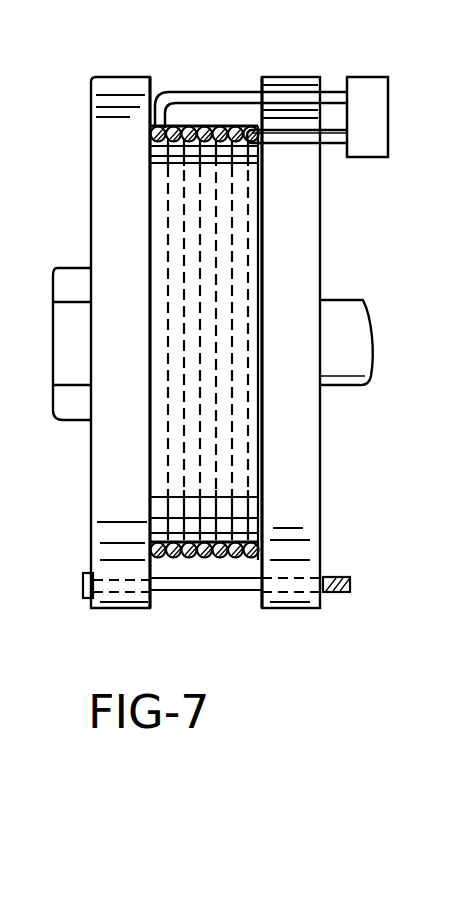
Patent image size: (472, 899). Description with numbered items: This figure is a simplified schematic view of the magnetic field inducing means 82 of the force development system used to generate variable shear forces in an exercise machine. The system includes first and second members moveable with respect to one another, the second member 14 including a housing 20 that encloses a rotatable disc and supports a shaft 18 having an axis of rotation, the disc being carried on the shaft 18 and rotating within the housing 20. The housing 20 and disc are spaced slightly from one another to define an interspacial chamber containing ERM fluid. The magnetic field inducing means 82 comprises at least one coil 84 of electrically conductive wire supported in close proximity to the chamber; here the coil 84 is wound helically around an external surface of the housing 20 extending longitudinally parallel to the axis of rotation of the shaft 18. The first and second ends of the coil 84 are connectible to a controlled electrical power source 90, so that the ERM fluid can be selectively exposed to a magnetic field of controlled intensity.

The second member 14 is at (92, 478).
The housing 20 is at (104, 204).
The shaft 18 is at (352, 313).
The magnetic field inducing means 82 is at (174, 88).
The coil 84 is at (213, 560).
The controlled electrical power source 90 is at (386, 150).